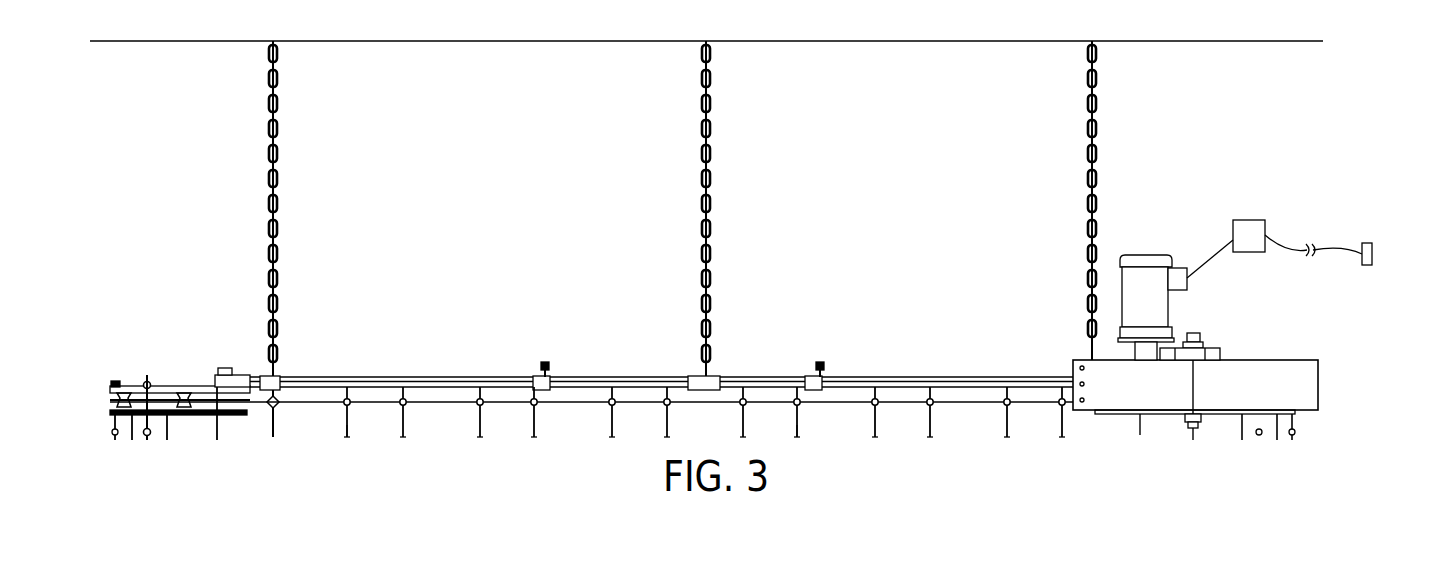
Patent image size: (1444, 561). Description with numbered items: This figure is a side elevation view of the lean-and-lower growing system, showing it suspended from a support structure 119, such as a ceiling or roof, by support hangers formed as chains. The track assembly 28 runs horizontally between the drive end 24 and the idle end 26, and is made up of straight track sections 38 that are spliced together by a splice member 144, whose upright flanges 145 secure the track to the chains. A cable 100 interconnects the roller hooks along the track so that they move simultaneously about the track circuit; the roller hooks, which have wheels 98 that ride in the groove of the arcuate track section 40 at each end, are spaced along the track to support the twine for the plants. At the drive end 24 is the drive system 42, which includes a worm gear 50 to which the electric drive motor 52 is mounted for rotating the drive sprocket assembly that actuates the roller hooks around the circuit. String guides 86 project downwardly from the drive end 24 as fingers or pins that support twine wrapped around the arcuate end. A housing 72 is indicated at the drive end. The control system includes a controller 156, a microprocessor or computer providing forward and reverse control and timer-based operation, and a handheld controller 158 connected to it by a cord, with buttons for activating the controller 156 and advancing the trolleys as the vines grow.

The support structure 119 is at (1225, 41).
The straight track sections 38 is at (381, 377).
The splice member 144 is at (715, 376).
The upright flanges 145 is at (698, 376).
The cable 100 is at (567, 403).
The track assembly 28 is at (866, 363).
The idle end 26 is at (178, 366).
The wheels 98 is at (146, 383).
The arcuate track sections 40 is at (217, 375).
The drive end 24 is at (1236, 339).
The housing 72 is at (1320, 392).
The drive system 42 is at (1200, 318).
The worm gear 50 is at (1220, 356).
The electric drive motor 52 is at (1130, 255).
The controller 156 is at (1258, 252).
The handheld controller 158 is at (1368, 243).
The string guides 86 is at (1292, 440).